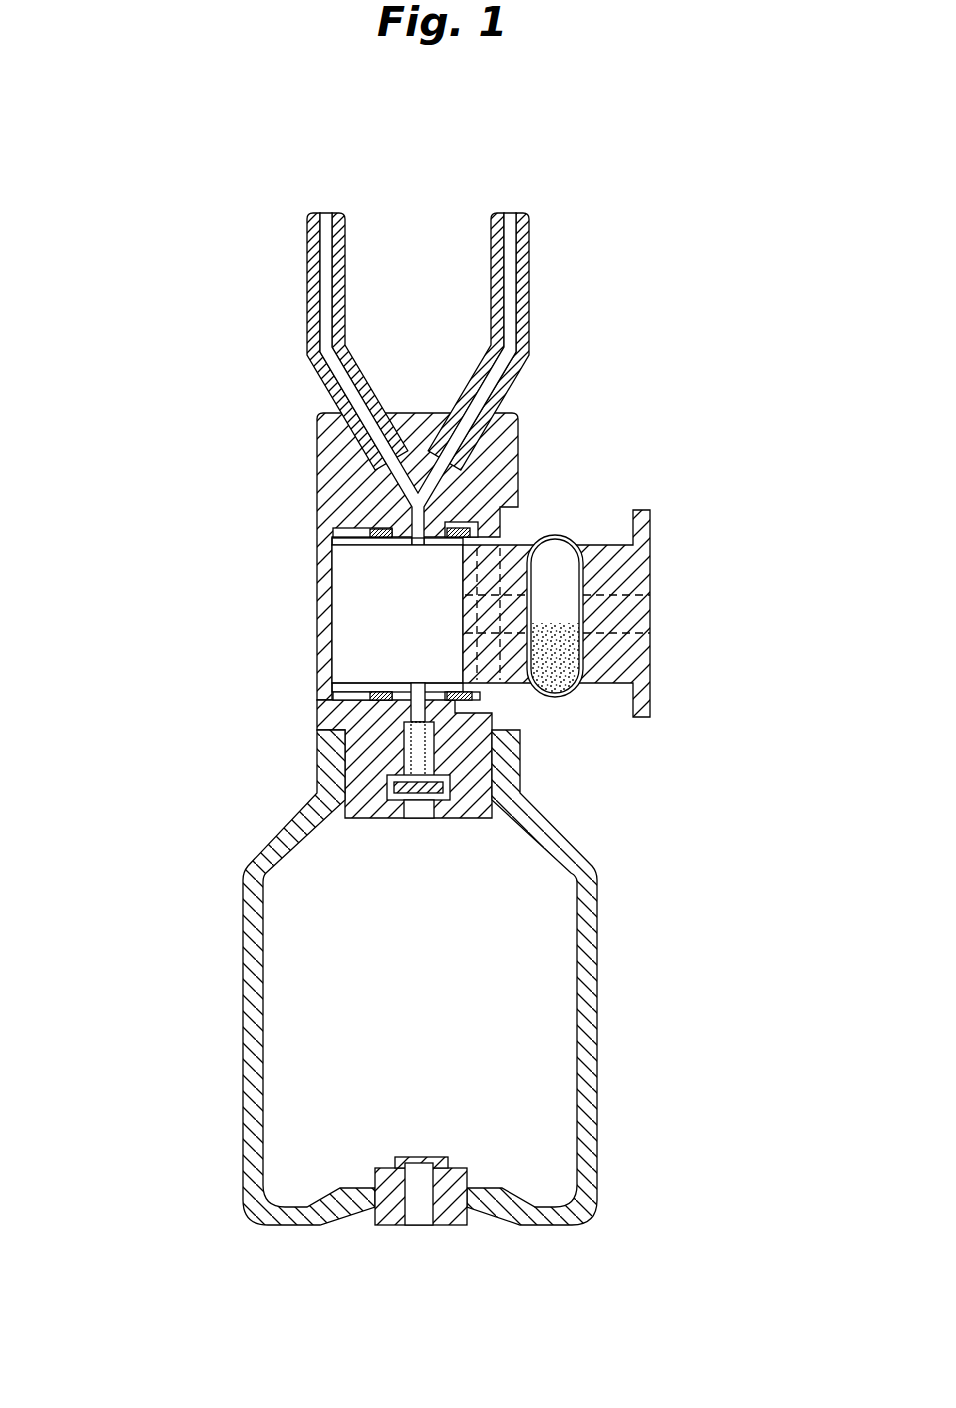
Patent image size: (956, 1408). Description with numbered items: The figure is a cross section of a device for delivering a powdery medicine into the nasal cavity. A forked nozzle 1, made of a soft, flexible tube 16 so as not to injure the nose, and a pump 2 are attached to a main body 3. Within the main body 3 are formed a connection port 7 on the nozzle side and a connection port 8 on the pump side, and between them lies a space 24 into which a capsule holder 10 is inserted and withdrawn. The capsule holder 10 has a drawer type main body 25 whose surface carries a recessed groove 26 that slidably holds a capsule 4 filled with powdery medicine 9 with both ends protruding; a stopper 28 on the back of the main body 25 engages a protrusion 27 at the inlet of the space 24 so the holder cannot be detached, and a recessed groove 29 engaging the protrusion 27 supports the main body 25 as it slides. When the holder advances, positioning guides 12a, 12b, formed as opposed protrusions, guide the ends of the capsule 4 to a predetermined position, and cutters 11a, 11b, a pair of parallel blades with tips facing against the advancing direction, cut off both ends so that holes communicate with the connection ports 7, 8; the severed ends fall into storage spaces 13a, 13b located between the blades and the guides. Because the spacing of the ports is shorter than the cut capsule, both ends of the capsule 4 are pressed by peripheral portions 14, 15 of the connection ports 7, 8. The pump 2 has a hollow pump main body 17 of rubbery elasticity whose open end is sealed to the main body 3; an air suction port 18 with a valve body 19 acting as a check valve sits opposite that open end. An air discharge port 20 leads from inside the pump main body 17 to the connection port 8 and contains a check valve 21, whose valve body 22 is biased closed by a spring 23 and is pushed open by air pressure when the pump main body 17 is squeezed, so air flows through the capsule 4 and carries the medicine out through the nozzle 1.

The forked nozzle 1 is at (418, 321).
The pump 2 is at (392, 1018).
The main body 3 is at (401, 544).
The capsule 4 is at (574, 536).
The connection port on the side of the nozzle 7 is at (420, 547).
The connection port on the side of the pump 8 is at (420, 690).
The powdery medicine 9 is at (586, 683).
The capsule holder 10 is at (572, 593).
The cutter 11a is at (476, 520).
The cutter 11b is at (495, 725).
The positioning guide 12a is at (500, 532).
The positioning guide 12b is at (490, 697).
The storage space 13a is at (462, 462).
The storage space 13b is at (498, 757).
The peripheral portion 14 is at (330, 541).
The peripheral portion 15 is at (330, 692).
The tube 16 is at (307, 303).
The pump main body 17 is at (243, 1052).
The air suction port 18 is at (516, 1183).
The valve body 19 is at (432, 1158).
The air discharge port 20 is at (417, 812).
The check valve 21 is at (296, 768).
The valve body 22 is at (400, 786).
The spring 23 is at (415, 738).
The space 24 is at (350, 602).
The main body of capsule holder 25 is at (643, 655).
The recessed groove 26 is at (587, 550).
The protrusion 27 is at (463, 602).
The stopper 28 is at (463, 653).
The recessed groove 29 is at (630, 614).